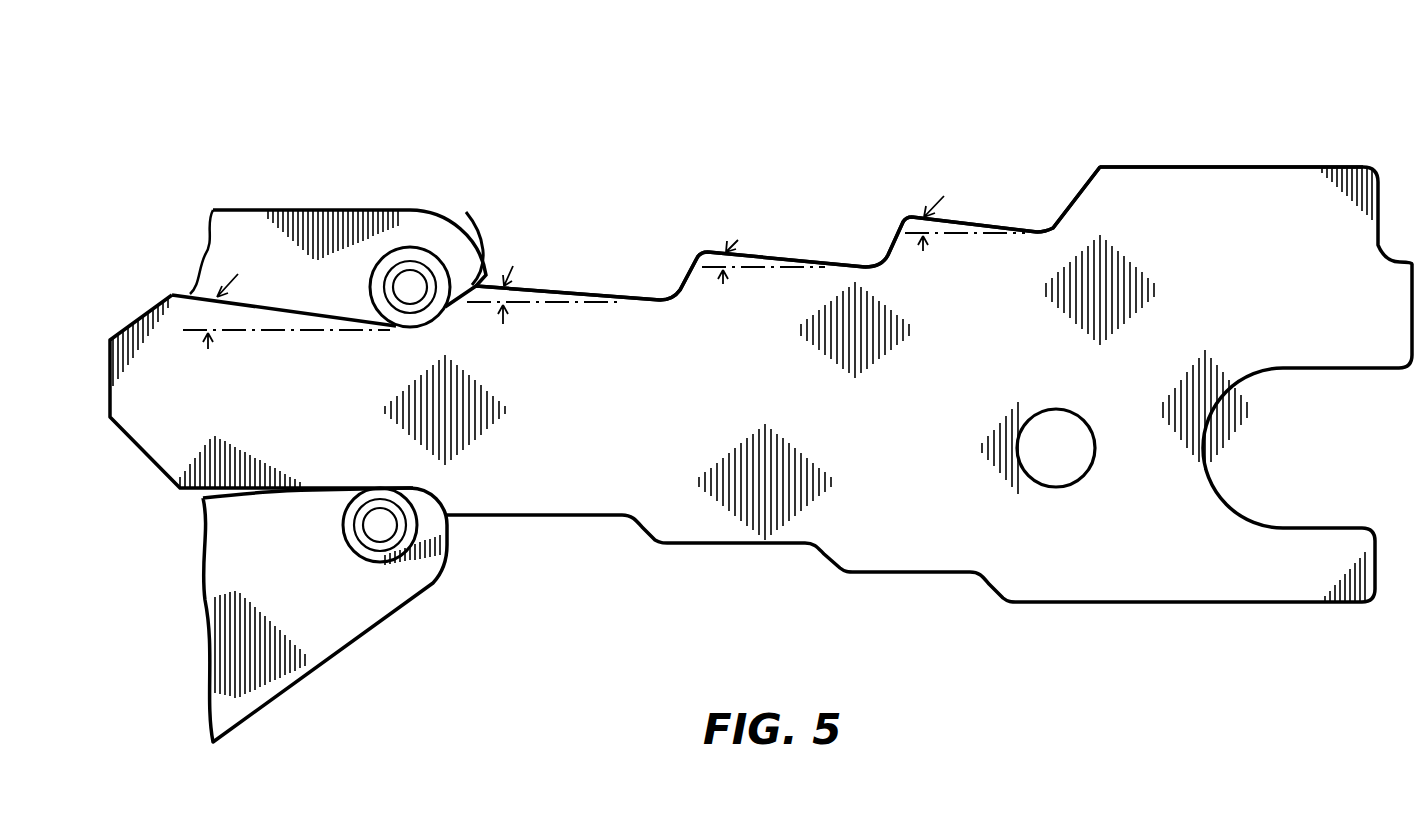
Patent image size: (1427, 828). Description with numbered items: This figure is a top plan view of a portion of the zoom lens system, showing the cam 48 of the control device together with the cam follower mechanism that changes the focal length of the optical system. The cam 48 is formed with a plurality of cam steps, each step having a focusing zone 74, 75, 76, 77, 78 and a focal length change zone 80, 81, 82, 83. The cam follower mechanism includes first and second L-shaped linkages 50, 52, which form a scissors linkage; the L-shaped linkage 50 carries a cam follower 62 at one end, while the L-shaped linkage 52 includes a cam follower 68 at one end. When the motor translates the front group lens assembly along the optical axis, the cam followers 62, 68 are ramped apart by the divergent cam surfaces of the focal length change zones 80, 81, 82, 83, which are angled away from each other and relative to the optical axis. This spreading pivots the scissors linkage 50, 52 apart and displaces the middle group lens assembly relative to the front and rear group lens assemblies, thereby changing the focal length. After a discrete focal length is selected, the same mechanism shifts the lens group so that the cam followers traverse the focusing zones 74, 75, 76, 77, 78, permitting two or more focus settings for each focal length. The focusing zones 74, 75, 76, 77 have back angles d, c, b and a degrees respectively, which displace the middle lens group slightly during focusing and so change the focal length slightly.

The cam 48 is at (824, 132).
The first L-shaped linkage 50 is at (243, 223).
The second L-shaped linkage 52 is at (365, 618).
The cam follower 62 is at (410, 247).
The cam follower 68 is at (345, 548).
The focusing zone 74 is at (333, 308).
The focusing zone 75 is at (620, 272).
The focusing zone 76 is at (813, 260).
The focusing zone 77 is at (1015, 207).
The focusing zone 78 is at (1215, 163).
The focal length change zone 80 is at (458, 248).
The focal length change zone 81 is at (690, 267).
The focal length change zone 82 is at (900, 230).
The focal length change zone 83 is at (1085, 185).